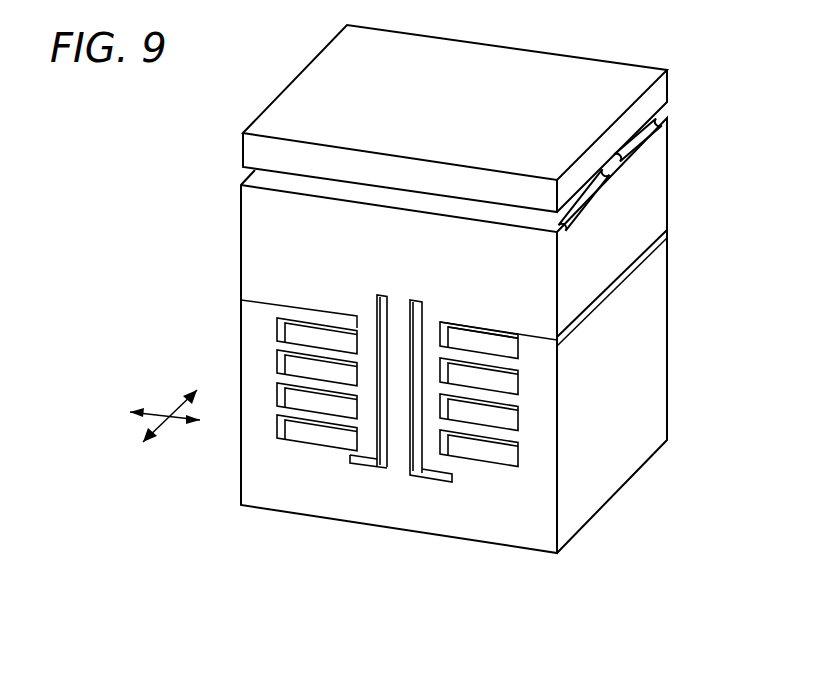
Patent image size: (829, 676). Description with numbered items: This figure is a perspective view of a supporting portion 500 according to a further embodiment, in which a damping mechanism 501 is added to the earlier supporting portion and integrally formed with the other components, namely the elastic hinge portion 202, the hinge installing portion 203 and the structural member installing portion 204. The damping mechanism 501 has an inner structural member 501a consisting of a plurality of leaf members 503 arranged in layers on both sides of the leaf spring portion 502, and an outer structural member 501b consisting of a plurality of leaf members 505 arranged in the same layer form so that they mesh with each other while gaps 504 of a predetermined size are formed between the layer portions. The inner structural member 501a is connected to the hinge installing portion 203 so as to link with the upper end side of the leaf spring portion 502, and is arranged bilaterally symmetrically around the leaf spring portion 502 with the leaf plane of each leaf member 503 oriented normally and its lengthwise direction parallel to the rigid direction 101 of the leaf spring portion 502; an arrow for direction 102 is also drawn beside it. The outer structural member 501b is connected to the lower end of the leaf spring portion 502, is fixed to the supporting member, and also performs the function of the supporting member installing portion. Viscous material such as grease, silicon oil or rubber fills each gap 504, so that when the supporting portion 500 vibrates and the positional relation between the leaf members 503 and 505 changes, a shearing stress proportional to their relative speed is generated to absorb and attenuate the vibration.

The supporting portion 500 is at (274, 84).
The structural member installing portion 204 is at (632, 77).
The hinge installing portion 203 is at (645, 206).
The elastic hinge portion 202 is at (615, 162).
The damping mechanism 501 is at (590, 600).
The inner structural member 501a is at (472, 467).
The outer structural member 501b is at (527, 528).
The leaf spring portion 502 is at (398, 463).
The leaf member 503 is at (517, 360).
The gap 504 is at (322, 425).
The leaf member 505 is at (475, 340).
The rigid direction 101 is at (172, 422).
The second direction 102 is at (162, 412).